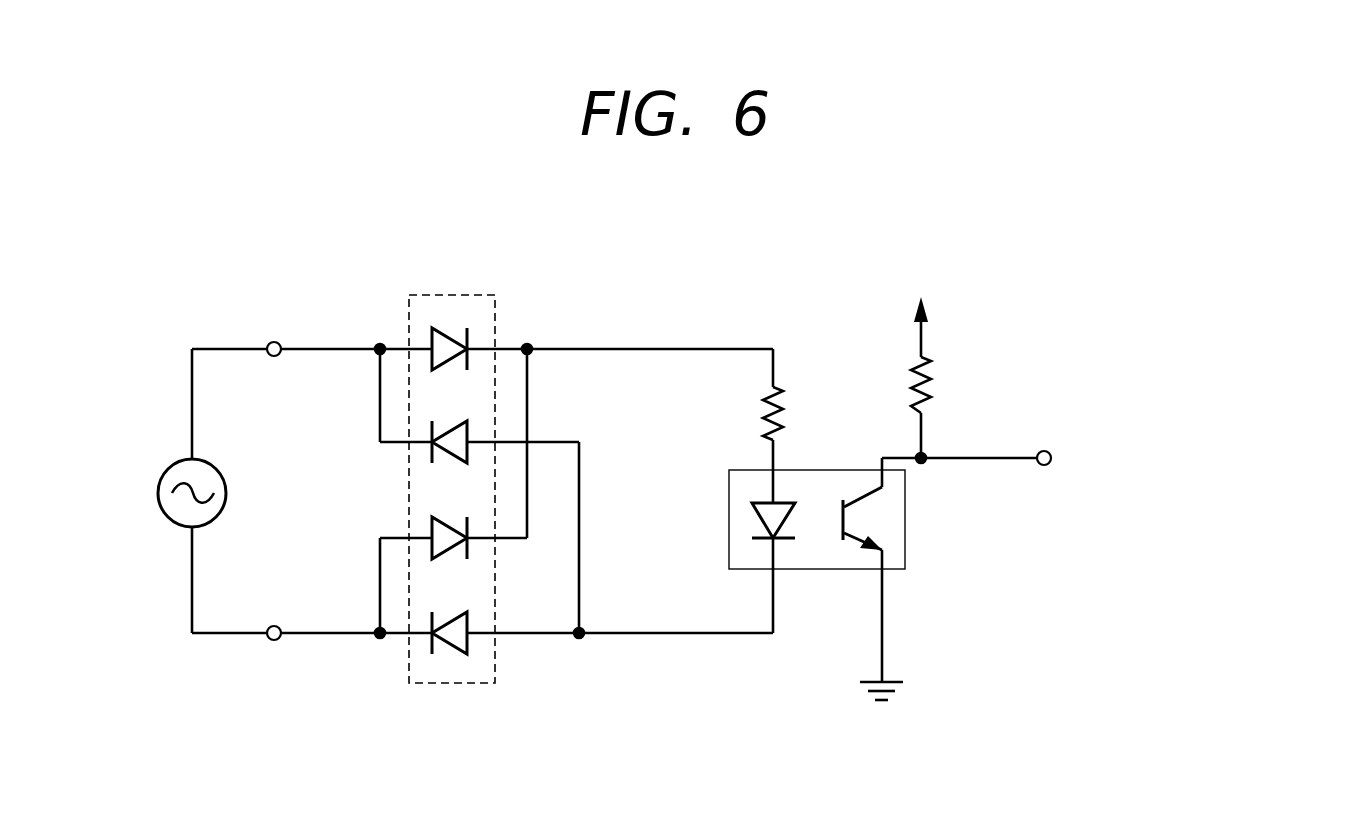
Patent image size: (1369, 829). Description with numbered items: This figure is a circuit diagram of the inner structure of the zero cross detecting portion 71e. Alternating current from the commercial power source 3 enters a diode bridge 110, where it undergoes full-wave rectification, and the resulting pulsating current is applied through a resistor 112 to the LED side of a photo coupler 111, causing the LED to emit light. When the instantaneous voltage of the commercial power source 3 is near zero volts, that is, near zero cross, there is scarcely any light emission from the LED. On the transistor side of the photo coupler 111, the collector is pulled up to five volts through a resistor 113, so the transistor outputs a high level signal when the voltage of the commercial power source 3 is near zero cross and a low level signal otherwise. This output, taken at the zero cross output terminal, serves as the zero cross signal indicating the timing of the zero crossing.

The commercial power source 3 is at (173, 463).
The zero cross detecting portion 71e is at (332, 791).
The diode bridge 110 is at (472, 294).
The photo coupler 111 is at (818, 573).
The resistor 112 is at (768, 392).
The resistor 113 is at (940, 370).